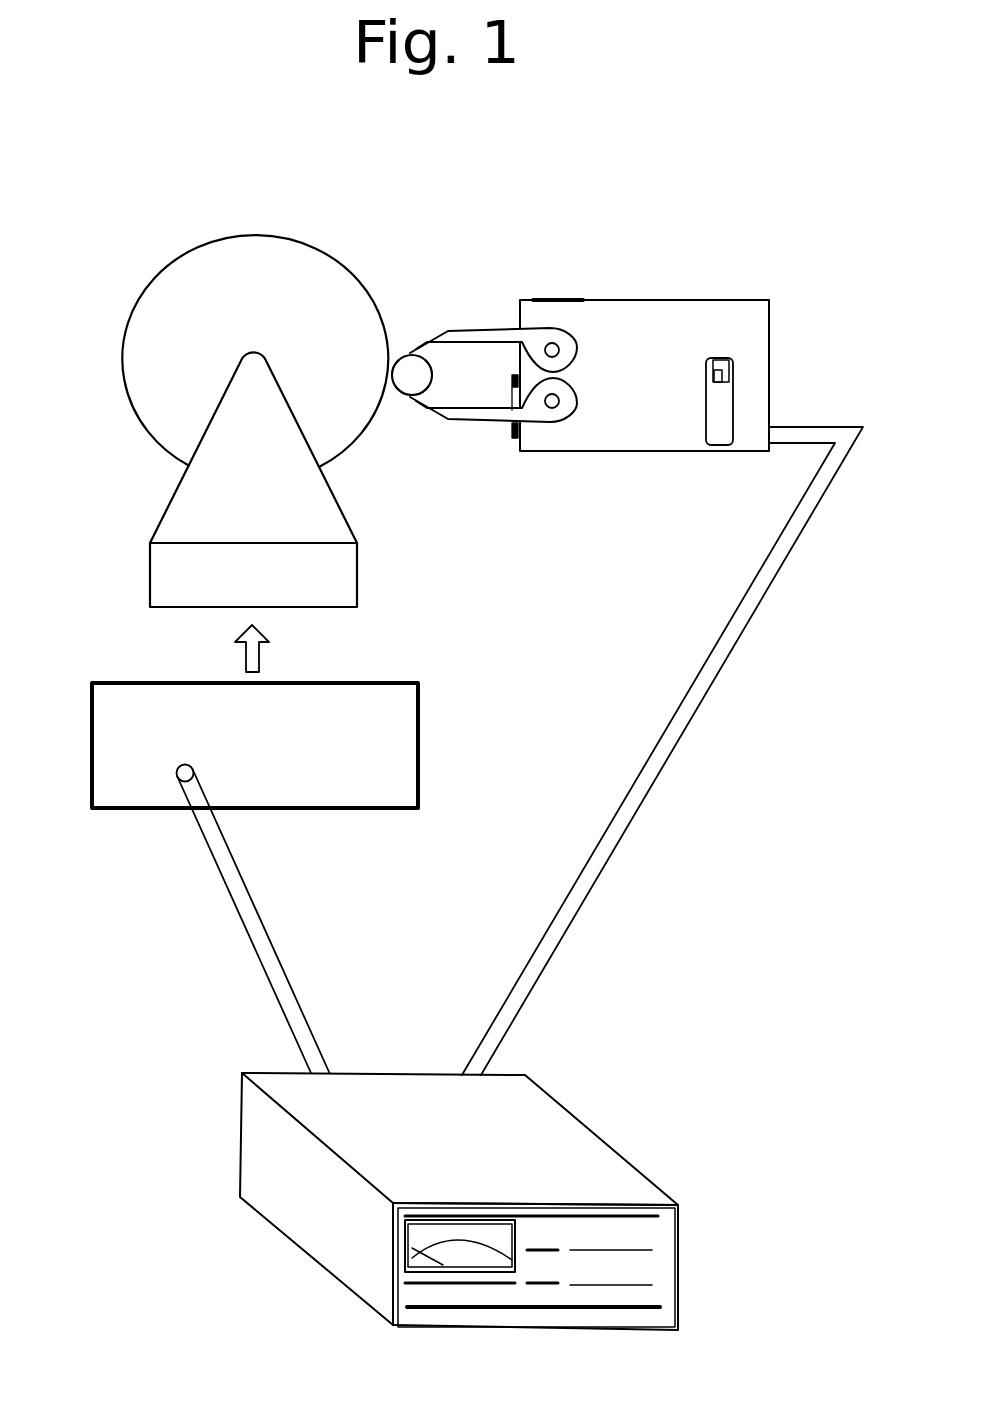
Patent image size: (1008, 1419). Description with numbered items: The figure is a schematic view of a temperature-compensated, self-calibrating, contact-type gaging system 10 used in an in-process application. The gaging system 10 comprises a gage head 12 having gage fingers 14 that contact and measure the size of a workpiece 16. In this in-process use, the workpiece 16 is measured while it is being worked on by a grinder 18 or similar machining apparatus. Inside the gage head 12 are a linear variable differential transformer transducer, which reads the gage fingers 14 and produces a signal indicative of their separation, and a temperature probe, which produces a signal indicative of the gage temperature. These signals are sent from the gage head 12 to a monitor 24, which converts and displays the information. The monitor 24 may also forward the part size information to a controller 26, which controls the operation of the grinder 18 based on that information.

The gaging system 10 is at (703, 795).
The gage head 12 is at (647, 310).
The gage fingers 14 is at (470, 325).
The workpiece 16 is at (408, 356).
The grinder 18 is at (188, 262).
The monitor 24 is at (592, 1147).
The controller 26 is at (133, 792).